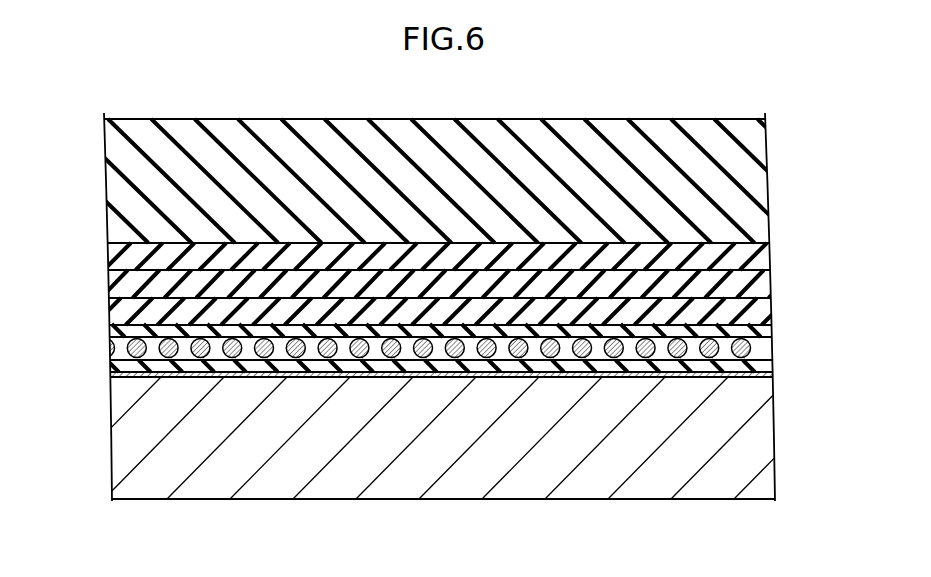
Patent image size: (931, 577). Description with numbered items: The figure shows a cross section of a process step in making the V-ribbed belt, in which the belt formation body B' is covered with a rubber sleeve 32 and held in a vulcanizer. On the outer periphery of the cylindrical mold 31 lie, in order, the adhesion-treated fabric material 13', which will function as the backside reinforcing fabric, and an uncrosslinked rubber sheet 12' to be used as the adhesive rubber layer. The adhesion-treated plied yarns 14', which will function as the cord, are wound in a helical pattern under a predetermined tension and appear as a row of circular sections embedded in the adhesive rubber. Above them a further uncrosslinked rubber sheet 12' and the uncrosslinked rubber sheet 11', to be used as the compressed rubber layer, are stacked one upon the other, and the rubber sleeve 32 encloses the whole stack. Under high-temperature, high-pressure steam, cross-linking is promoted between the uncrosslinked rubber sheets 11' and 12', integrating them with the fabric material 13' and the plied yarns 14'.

The rubber sleeve 32 is at (461, 197).
The cylindrical mold 31 is at (458, 450).
The uncrosslinked rubber sheet 11' is at (422, 284).
The uncrosslinked rubber sheet 12' is at (419, 348).
The fabric material 13' is at (462, 393).
The plied yarn 14' is at (460, 348).
The belt formation body B' is at (784, 217).